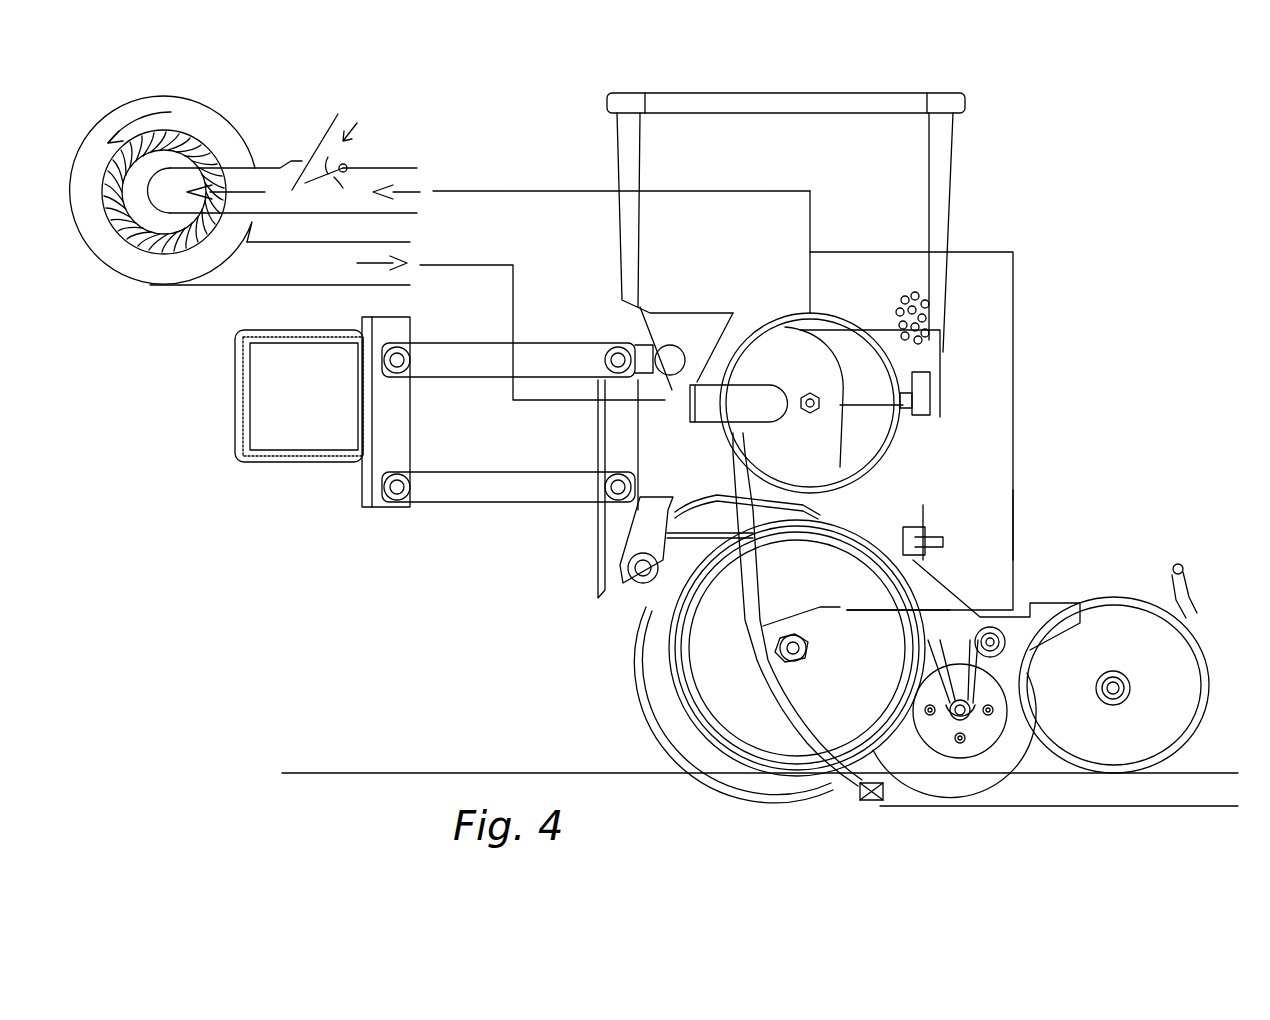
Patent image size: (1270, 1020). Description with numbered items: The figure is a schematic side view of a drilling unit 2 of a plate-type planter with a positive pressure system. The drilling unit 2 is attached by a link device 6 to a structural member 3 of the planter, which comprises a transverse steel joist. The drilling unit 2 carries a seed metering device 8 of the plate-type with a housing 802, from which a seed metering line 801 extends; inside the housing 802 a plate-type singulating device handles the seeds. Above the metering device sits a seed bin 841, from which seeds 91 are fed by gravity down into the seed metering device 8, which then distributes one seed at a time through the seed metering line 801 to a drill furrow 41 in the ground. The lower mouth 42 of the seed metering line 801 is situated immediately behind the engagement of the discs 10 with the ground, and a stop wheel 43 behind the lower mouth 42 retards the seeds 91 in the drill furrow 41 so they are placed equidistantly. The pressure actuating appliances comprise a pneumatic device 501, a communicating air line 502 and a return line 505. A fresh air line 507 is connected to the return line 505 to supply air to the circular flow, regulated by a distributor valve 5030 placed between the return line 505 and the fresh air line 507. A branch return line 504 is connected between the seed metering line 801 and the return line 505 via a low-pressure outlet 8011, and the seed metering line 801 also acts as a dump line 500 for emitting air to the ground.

The drilling unit 2 is at (1133, 512).
The structural member 3 is at (290, 460).
The link device 6 is at (515, 490).
The seed metering device 8 is at (1104, 358).
The discs 10 is at (720, 780).
The drill furrow 41 is at (1173, 792).
The lower mouth 42 is at (880, 790).
The stop wheel 43 is at (993, 788).
The seeds 91 is at (930, 313).
The dump line 500 is at (763, 590).
The pneumatic device 501 is at (153, 272).
The communicating air line 502 is at (513, 307).
The branch return line 504 is at (1017, 490).
The return line 505 is at (522, 190).
The fresh air line 507 is at (372, 142).
The seed metering line 801 is at (763, 687).
The housing 802 is at (860, 440).
The seed bin 841 is at (907, 180).
The distributor valve 5030 is at (317, 182).
The low-pressure outlet 8011 is at (810, 285).